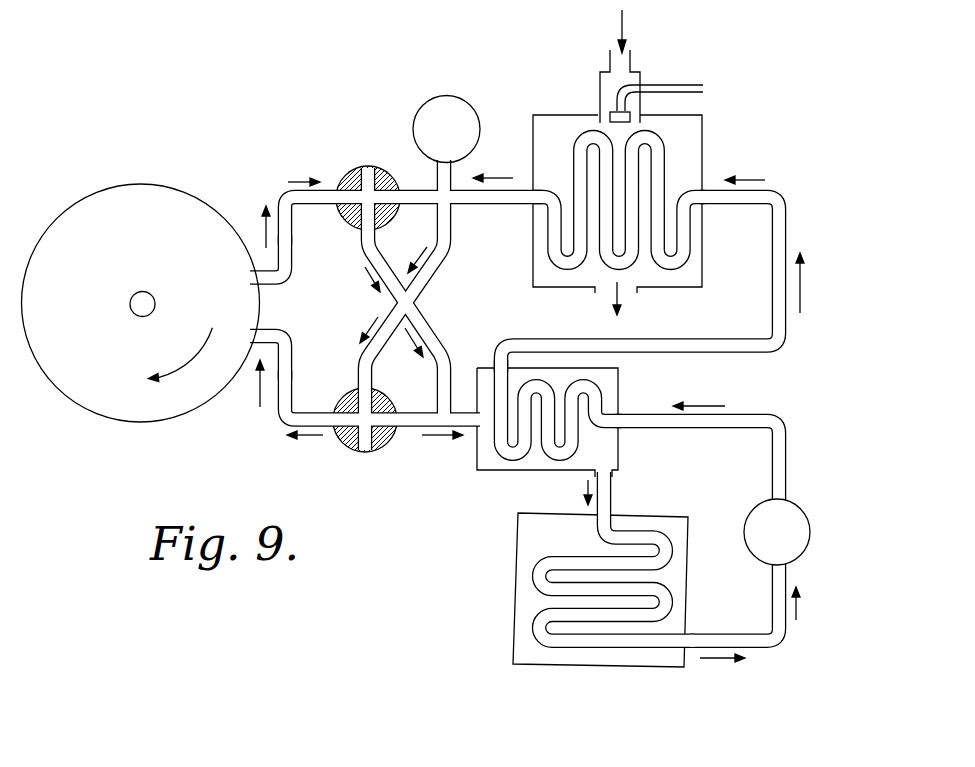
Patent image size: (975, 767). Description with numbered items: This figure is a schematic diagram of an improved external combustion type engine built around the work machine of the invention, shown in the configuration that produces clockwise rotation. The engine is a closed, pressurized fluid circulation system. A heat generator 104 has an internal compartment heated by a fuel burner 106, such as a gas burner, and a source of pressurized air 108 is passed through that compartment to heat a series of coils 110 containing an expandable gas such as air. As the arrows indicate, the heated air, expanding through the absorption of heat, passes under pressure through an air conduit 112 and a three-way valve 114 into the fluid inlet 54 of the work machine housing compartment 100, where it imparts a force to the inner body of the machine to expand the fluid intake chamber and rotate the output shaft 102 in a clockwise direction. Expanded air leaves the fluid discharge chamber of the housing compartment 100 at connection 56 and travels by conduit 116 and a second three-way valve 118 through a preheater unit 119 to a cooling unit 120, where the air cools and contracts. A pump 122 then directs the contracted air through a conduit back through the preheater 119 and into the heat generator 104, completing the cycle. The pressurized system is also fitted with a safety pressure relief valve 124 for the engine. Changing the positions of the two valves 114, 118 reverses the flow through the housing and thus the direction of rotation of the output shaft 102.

The work machine housing compartment 100 is at (67, 212).
The output shaft 102 is at (130, 304).
The upper drum conduit connection 56 is at (256, 280).
The fluid inlet 54 is at (256, 334).
The heat generator 104 is at (560, 114).
The fuel burner 106 is at (673, 86).
The source of pressurized air 108 is at (621, 25).
The coils 110 is at (574, 169).
The air conduit 112 is at (277, 423).
The three-way valve 114 is at (341, 449).
The conduit 116 is at (280, 197).
The three-way valve 118 is at (356, 167).
The preheater unit 119 is at (619, 372).
The cooling unit 120 is at (514, 628).
The pump 122 is at (754, 556).
The safety pressure relief valve 124 is at (418, 125).